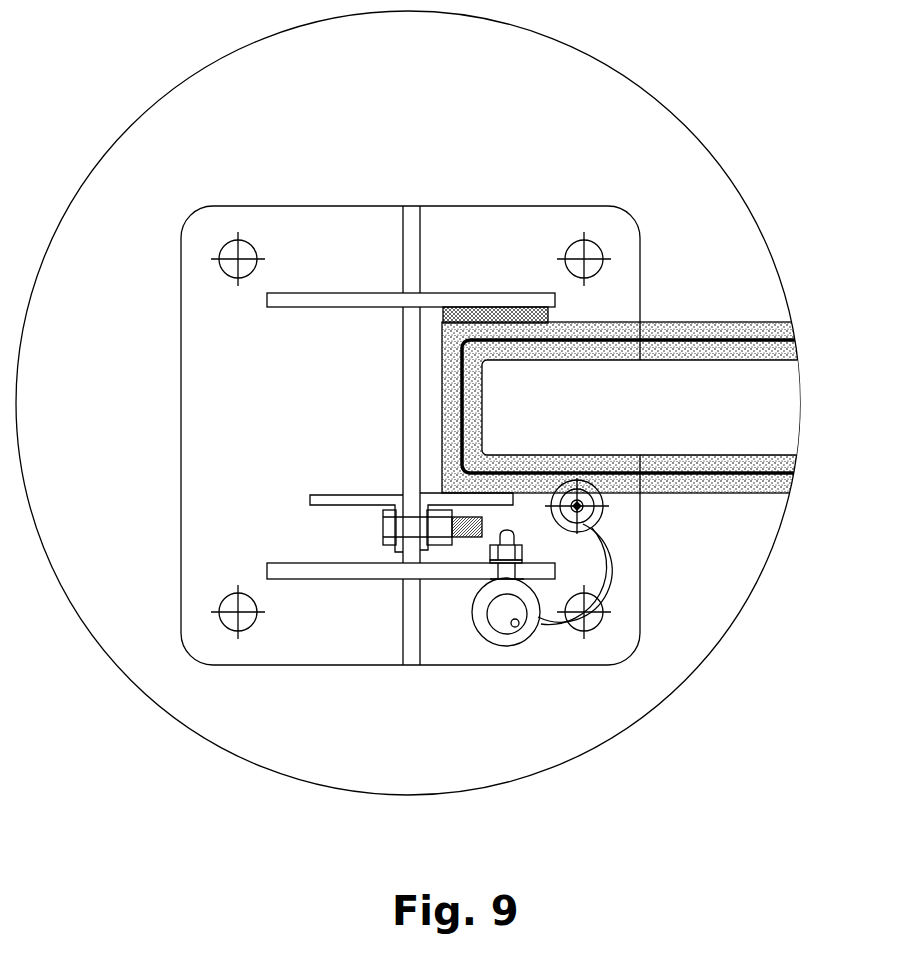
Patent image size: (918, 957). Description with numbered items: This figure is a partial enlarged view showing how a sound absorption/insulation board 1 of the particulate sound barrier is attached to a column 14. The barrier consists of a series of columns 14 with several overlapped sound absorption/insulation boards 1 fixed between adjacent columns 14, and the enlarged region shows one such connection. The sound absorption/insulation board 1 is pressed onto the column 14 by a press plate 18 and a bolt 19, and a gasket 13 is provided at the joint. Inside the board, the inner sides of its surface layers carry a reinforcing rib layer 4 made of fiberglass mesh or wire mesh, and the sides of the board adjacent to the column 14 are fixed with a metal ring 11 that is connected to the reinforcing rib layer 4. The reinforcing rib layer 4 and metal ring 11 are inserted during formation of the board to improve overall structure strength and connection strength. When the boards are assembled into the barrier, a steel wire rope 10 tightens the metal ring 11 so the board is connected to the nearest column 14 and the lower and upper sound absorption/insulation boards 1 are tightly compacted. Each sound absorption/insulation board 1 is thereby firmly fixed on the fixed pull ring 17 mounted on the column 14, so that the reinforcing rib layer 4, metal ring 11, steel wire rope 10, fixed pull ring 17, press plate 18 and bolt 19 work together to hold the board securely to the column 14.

The sound absorption/insulation board 1 is at (655, 360).
The reinforcing rib layer 4 is at (790, 492).
The steel wire rope 10 is at (583, 578).
The metal ring 11 is at (597, 512).
The gasket 13 is at (555, 312).
The column 14 is at (440, 302).
The fixed pull ring 17 is at (513, 623).
The press plate 18 is at (310, 495).
The bolt 19 is at (383, 522).